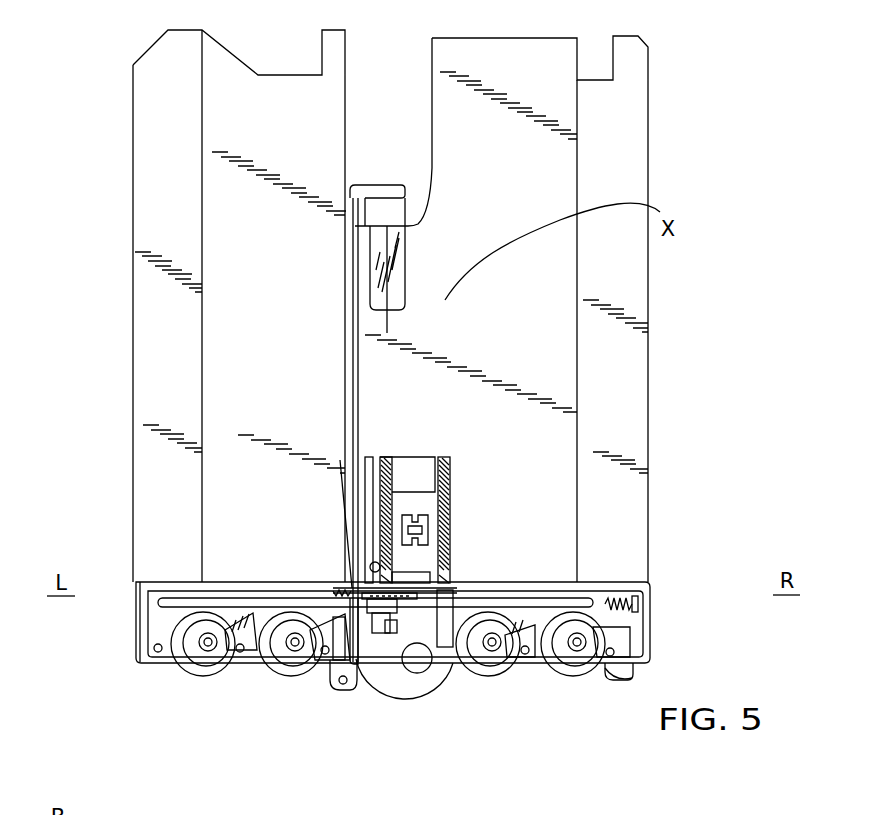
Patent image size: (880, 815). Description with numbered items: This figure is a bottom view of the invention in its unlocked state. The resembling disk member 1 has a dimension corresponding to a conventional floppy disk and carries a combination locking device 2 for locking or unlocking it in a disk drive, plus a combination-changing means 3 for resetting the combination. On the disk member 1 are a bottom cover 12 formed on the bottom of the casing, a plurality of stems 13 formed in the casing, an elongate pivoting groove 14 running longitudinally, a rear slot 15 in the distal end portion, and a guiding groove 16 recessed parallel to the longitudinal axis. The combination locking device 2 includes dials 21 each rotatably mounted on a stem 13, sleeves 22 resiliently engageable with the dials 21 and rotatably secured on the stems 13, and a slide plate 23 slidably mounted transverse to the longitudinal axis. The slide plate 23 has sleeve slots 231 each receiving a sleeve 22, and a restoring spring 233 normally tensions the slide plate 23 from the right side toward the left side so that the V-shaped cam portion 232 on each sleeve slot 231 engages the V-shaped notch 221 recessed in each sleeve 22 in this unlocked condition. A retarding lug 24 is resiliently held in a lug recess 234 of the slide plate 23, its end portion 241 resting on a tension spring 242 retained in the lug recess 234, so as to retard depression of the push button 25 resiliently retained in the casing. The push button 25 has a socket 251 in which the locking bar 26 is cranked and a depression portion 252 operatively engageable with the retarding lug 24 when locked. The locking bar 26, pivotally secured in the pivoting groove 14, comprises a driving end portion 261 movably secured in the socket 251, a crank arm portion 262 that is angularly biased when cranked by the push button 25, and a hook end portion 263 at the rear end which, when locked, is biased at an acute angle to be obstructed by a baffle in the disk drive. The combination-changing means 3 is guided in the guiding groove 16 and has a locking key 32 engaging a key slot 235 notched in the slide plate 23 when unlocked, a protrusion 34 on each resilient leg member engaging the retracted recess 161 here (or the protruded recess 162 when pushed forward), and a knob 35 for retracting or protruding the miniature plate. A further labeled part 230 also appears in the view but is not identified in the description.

The resembling disk member 1 is at (131, 360).
The combination locking device 2 is at (180, 672).
The combination-changing means 3 is at (432, 548).
The bottom cover 12 is at (627, 678).
The stems 13 is at (578, 652).
The elongate pivoting groove 14 is at (357, 265).
The rear slot 15 is at (418, 218).
The guiding groove 16 is at (400, 480).
The dials 21 is at (257, 667).
The sleeves 22 is at (292, 653).
The slide plate 23 is at (615, 628).
The retarding lug 24 is at (412, 688).
The push button 25 is at (432, 670).
The locking bar 26 is at (346, 337).
The locking key 32 is at (450, 540).
The protrusion 34 is at (419, 492).
The knob 35 is at (410, 515).
The retracted recess 161 is at (450, 470).
The protruded recess 162 is at (450, 500).
The V-shaped notch 221 is at (592, 665).
The slide 230 is at (347, 595).
The sleeve slots 231 is at (620, 597).
The V-shaped cam portion 232 is at (326, 690).
The restoring spring 233 is at (632, 590).
The lug recess 234 is at (340, 597).
The key slot 235 is at (597, 600).
The end portion 241 is at (340, 460).
The tension spring 242 is at (340, 597).
The socket 251 is at (453, 595).
The depression portion 252 is at (450, 573).
The driving end portion 261 is at (374, 652).
The crank arm portion 262 is at (358, 662).
The hook end portion 263 is at (387, 200).